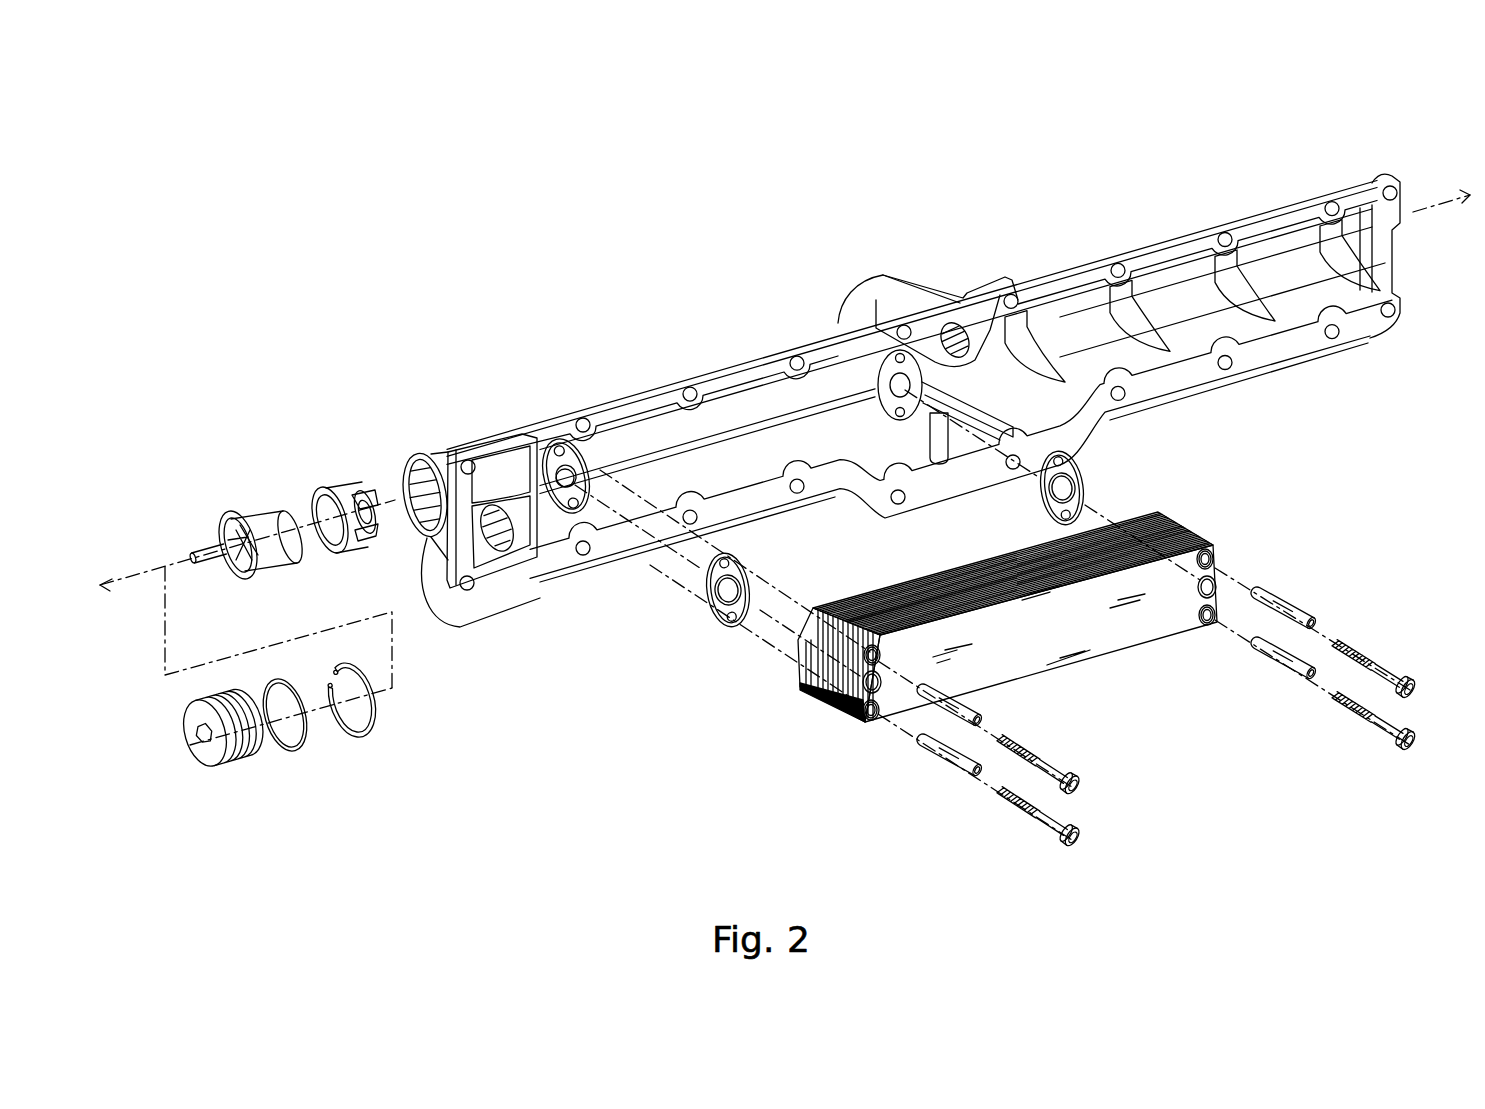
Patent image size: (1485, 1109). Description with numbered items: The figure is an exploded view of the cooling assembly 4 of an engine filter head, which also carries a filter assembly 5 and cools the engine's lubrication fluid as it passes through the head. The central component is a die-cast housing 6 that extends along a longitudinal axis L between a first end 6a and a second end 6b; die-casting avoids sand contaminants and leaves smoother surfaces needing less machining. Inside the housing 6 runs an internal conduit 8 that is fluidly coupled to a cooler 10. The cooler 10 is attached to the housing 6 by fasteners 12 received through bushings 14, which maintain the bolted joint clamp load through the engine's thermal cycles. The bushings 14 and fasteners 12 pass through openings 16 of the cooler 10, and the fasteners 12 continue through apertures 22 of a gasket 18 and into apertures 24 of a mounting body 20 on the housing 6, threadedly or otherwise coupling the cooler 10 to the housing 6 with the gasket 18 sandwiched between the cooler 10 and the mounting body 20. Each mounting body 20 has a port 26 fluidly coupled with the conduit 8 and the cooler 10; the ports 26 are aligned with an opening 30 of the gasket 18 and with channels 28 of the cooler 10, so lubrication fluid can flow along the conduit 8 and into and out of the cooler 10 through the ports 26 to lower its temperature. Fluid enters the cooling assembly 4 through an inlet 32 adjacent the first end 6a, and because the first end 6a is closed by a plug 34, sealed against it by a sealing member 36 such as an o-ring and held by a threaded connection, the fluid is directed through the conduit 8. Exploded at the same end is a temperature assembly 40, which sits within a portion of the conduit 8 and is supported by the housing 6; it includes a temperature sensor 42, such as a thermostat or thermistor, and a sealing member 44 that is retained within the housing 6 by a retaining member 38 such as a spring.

The cooling assembly 4 is at (682, 220).
The filter assembly 5 is at (917, 297).
The housing 6 is at (1080, 258).
The first end 6a is at (430, 592).
The second end 6b is at (1377, 183).
The internal conduit 8 is at (418, 517).
The cooler 10 is at (1110, 630).
The fasteners 12 is at (1078, 838).
The bushings 14 is at (945, 758).
The openings 16 is at (876, 648).
The gasket 18 is at (1080, 480).
The mounting body 20 is at (880, 368).
The apertures 22 is at (745, 580).
The apertures 24 is at (568, 522).
The port 26 is at (578, 493).
The channels 28 is at (868, 712).
The opening 30 is at (712, 618).
The inlet 32 is at (507, 553).
The plug 34 is at (185, 768).
The sealing member 36 is at (298, 752).
The retaining member 38 is at (378, 713).
The temperature assembly 40 is at (274, 468).
The temperature sensor 42 is at (222, 535).
The sealing member 44 is at (342, 488).